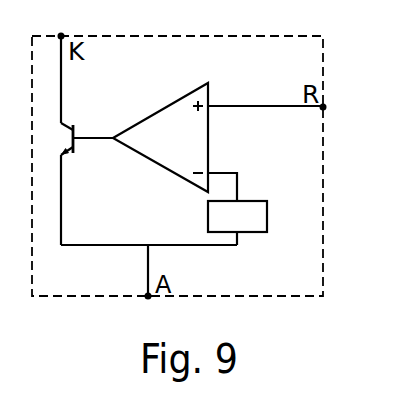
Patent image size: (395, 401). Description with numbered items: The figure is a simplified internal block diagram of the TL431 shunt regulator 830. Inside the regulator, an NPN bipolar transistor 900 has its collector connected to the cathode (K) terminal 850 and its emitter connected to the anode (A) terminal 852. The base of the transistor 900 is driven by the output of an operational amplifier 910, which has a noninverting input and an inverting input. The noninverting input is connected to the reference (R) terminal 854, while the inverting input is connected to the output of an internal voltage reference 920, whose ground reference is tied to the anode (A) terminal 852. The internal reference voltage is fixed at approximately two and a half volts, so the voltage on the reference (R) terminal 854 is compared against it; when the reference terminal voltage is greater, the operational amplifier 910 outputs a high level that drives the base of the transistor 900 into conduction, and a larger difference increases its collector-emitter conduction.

The TL431 shunt regulator 830 is at (202, 65).
The cathode (K) terminal 850 is at (61, 35).
The anode (A) terminal 852 is at (148, 296).
The reference (R) terminal 854 is at (323, 107).
The NPN bipolar transistor 900 is at (74, 128).
The operational amplifier 910 is at (208, 161).
The internal voltage reference 920 is at (267, 217).